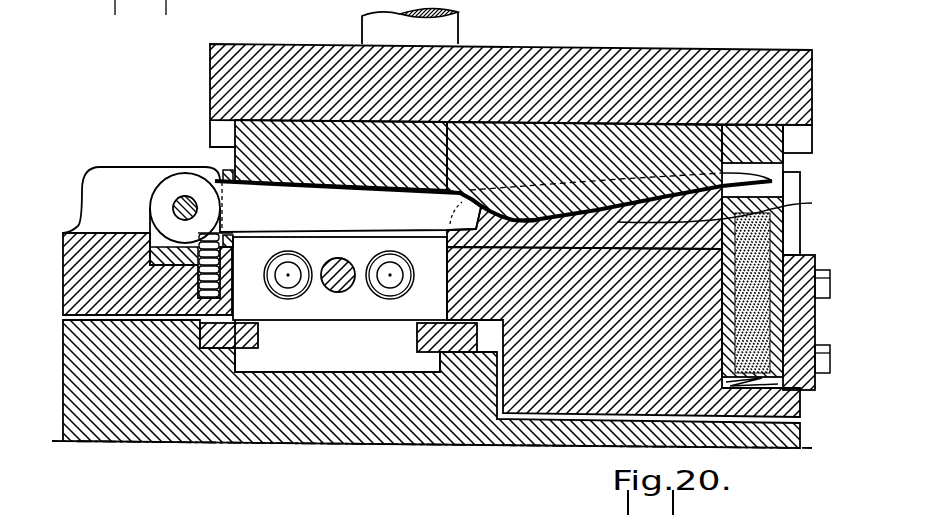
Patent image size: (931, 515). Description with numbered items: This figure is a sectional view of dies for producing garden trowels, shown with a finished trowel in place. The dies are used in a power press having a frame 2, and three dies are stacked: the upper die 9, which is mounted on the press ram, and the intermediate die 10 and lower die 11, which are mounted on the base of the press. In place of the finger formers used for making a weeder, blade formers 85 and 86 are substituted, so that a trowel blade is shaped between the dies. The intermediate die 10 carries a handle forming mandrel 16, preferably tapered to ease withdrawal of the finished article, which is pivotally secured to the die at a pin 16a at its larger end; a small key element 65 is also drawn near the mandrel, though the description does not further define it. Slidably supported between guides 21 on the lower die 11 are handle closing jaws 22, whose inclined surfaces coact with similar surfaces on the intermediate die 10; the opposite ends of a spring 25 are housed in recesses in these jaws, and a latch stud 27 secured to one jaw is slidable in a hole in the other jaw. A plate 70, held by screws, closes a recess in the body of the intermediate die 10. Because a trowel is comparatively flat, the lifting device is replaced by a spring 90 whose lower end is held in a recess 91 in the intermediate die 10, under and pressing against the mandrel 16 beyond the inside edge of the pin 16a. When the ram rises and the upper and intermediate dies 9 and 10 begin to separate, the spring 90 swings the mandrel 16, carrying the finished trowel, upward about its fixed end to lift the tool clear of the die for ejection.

The frame 2 is at (63, 257).
The upper die 9 is at (633, 62).
The intermediate die 10 is at (678, 137).
The lower die 11 is at (68, 383).
The handle forming mandrel 16 is at (240, 203).
The pivot pin 16a is at (172, 205).
The guides 21 is at (249, 335).
The handle closing jaws 22 is at (310, 355).
The spring 25 is at (303, 291).
The latch stud 27 is at (328, 260).
The key 65 is at (228, 172).
The plate 70 is at (816, 256).
The blade former 85 is at (571, 197).
The blade former 86 is at (726, 206).
The spring 90 is at (220, 228).
The recess 91 is at (222, 280).